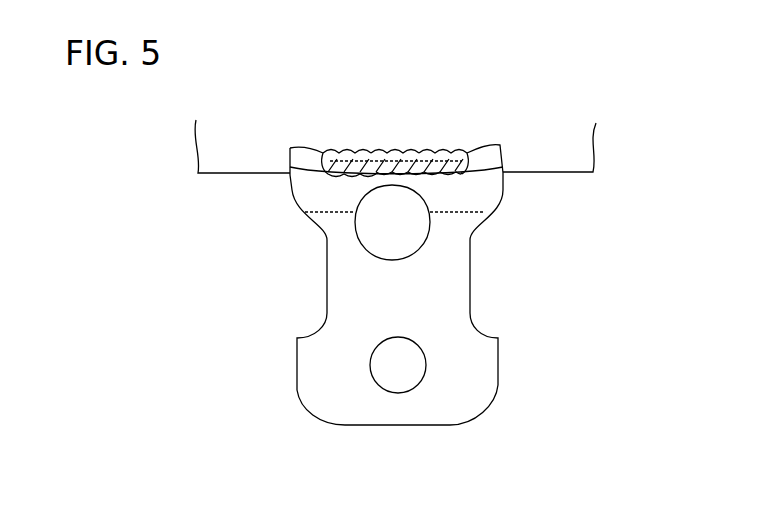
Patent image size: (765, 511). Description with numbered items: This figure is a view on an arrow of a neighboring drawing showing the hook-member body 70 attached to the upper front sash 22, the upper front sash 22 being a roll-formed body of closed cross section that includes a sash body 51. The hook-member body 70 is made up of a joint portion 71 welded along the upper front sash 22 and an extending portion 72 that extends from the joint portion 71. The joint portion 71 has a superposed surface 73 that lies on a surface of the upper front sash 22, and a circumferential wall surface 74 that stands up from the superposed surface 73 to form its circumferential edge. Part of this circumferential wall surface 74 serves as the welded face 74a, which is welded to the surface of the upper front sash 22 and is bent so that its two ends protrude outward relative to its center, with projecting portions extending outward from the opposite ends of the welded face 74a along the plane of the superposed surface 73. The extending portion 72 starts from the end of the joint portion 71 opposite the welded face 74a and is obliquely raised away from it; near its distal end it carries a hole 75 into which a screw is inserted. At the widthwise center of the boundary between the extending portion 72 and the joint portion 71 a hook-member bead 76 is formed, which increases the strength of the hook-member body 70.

The upper front sash 22 is at (237, 150).
The sash body 51 is at (547, 148).
The hook-member body 70 is at (342, 299).
The joint portion 71 is at (333, 197).
The extending portion 72 is at (326, 312).
The superposed surface 73 is at (290, 149).
The circumferential wall surface 74 is at (399, 109).
The welded face 74a is at (396, 152).
The hole 75 is at (378, 382).
The hook-member bead 76 is at (430, 232).